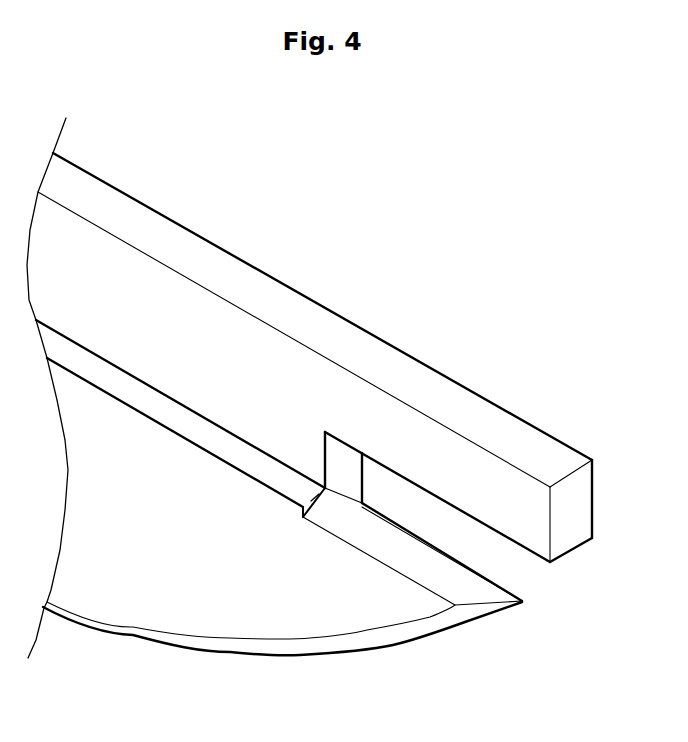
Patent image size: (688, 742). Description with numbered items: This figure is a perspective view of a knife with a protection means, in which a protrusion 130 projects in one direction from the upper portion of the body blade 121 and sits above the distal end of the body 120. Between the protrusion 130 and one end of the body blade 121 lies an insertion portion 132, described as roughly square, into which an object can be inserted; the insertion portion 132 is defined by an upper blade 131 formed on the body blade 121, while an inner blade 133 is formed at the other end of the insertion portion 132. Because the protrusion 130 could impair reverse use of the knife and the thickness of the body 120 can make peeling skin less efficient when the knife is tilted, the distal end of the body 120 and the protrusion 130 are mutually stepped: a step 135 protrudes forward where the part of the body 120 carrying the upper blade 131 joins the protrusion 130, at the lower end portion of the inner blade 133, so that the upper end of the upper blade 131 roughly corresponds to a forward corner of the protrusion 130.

The body 120 is at (255, 600).
The body blade 121 is at (393, 635).
The protrusion 130 is at (488, 488).
The upper blade 131 is at (465, 590).
The insertion portion 132 is at (490, 538).
The inner blade 133 is at (363, 478).
The step 135 is at (317, 492).